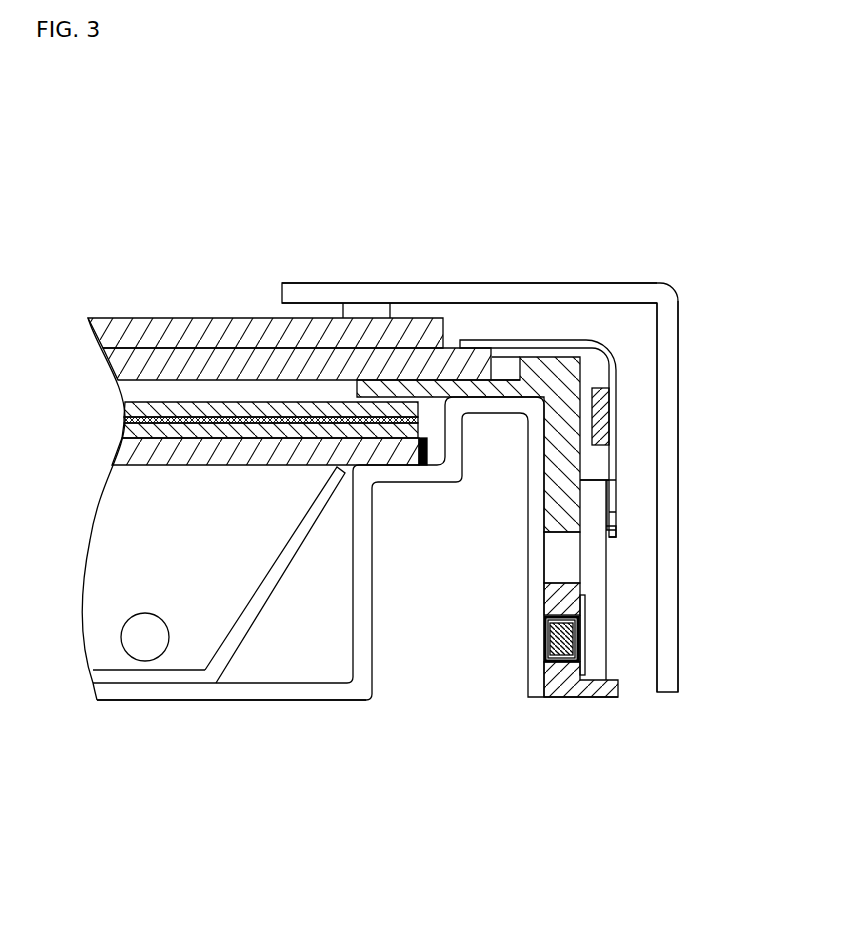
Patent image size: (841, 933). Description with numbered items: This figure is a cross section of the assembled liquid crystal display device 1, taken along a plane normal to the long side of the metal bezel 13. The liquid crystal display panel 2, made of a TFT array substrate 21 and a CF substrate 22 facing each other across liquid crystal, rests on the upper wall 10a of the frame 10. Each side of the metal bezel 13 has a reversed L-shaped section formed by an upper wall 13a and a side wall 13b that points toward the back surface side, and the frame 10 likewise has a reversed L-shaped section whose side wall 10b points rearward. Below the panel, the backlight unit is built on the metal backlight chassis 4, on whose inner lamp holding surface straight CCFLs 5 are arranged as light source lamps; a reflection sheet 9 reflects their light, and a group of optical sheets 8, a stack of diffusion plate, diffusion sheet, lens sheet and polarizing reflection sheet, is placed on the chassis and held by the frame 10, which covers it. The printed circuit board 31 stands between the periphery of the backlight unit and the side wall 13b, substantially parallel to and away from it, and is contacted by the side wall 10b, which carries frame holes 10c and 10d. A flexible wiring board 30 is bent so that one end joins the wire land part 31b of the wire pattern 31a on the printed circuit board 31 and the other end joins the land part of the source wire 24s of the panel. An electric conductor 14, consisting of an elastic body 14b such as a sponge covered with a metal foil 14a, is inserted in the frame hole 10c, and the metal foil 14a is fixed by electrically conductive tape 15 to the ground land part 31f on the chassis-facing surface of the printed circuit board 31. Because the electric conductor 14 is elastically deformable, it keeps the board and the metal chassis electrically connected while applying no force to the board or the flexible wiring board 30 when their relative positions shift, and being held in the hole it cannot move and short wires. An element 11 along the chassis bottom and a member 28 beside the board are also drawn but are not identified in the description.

The liquid crystal display device 1 is at (110, 240).
The liquid crystal display panel 2 is at (289, 297).
The TFT array substrate 21 is at (160, 362).
The CF substrate 22 is at (198, 324).
The backlight chassis 4 is at (288, 703).
The CCFL 5 is at (145, 662).
The group of optical sheets 8 is at (110, 397).
The reflection sheet 9 is at (264, 574).
The frame 10 is at (373, 596).
The upper wall 10a is at (424, 428).
The side wall 10b is at (562, 598).
The frame hole 10c is at (578, 622).
The frame hole 10d is at (563, 568).
The reflection sheet bottom portion 11 is at (235, 701).
The metal bezel 13 is at (483, 480).
The upper wall 13a is at (510, 292).
The side wall 13b is at (665, 697).
The electric conductor 14 is at (519, 715).
The metal foil 14a is at (549, 621).
The elastic body 14b is at (549, 637).
The electrically conductive tape 15 is at (549, 652).
The source wire 24s is at (461, 340).
The cushion 28 is at (598, 388).
The flexible wiring board 30 is at (548, 355).
The printed circuit board 31 is at (566, 621).
The wire pattern 31a is at (618, 531).
The wire land part 31b is at (618, 481).
The ground land part 31f is at (601, 688).